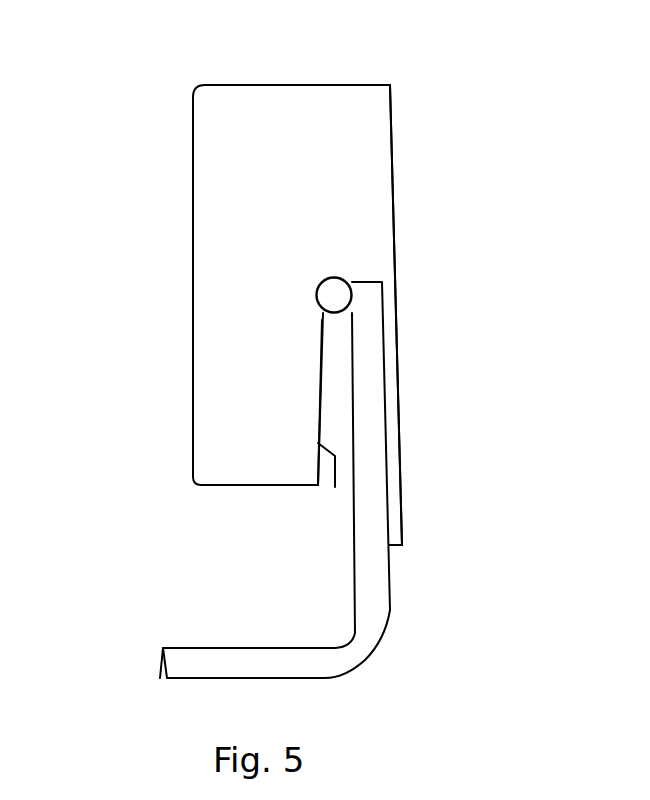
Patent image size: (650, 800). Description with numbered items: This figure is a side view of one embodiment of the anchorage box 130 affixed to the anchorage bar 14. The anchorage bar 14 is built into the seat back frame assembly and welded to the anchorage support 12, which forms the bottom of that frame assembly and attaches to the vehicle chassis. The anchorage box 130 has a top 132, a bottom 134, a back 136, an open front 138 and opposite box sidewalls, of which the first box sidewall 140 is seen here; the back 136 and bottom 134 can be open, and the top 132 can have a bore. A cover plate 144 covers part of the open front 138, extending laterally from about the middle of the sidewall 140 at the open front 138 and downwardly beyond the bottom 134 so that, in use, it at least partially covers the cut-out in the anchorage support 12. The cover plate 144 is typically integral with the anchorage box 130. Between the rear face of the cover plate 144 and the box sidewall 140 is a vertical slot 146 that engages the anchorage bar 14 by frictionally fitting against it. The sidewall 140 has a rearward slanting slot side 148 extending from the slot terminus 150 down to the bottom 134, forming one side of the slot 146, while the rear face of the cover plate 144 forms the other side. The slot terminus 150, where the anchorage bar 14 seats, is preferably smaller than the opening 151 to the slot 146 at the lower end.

The anchorage support 12 is at (188, 648).
The anchorage bar 14 is at (333, 295).
The anchorage box 130 is at (212, 143).
The top 132 is at (318, 85).
The bottom 134 is at (235, 490).
The back 136 is at (193, 321).
The open front 138 is at (393, 132).
The first box sidewall 140 is at (300, 181).
The cover plate 144 is at (402, 507).
The slot 146 is at (335, 487).
The rearward slanting slot side 148 is at (322, 372).
The slot terminus 150 is at (328, 278).
The opening 151 is at (233, 492).